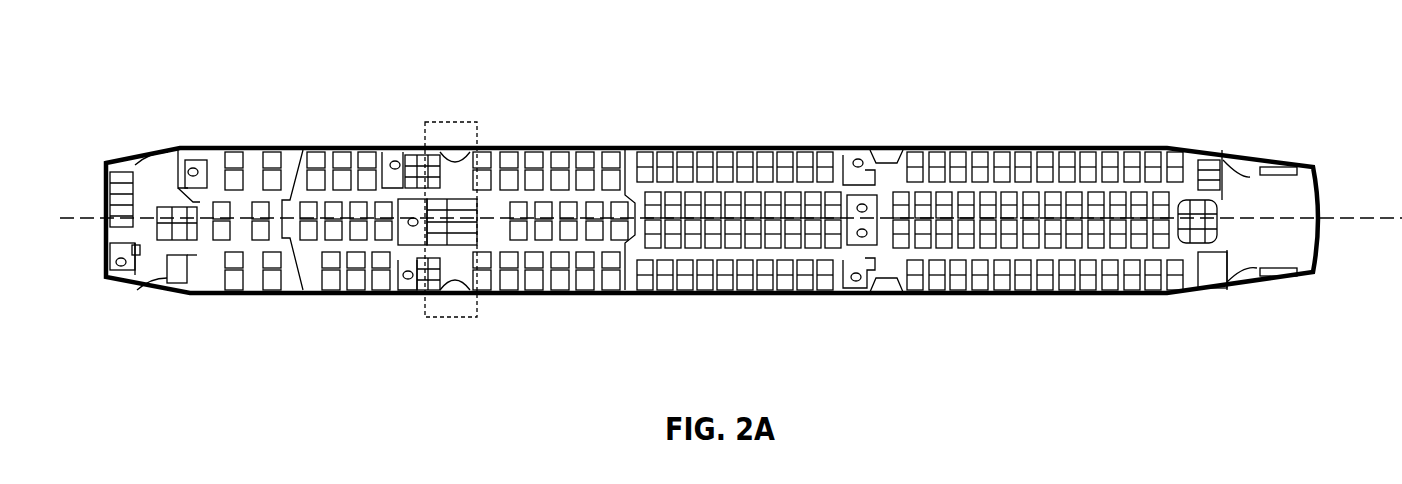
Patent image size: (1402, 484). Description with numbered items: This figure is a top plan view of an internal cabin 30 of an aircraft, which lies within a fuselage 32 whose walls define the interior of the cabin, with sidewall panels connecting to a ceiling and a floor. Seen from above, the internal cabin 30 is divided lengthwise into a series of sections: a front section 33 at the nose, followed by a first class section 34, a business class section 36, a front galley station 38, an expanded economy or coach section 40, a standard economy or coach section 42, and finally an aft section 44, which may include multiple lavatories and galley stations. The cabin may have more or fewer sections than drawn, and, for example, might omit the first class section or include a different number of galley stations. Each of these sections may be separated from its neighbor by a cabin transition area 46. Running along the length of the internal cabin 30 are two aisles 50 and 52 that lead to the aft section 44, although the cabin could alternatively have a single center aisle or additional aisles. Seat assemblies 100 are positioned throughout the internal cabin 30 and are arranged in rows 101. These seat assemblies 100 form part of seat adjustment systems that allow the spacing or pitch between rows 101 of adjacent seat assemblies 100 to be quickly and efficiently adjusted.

The internal cabin 30 is at (240, 50).
The fuselage 32 is at (573, 105).
The front section 33 is at (160, 308).
The first class section 34 is at (258, 296).
The business class section 36 is at (330, 148).
The front galley station 38 is at (452, 310).
The expanded economy or coach section 40 is at (553, 295).
The standard economy or coach section 42 is at (683, 148).
The aft section 44 is at (1247, 177).
The cabin transition area 46 is at (177, 148).
The aisle 50 is at (1043, 188).
The aisle 52 is at (1060, 258).
The seat assembly 100 is at (808, 162).
The row 101 is at (802, 145).